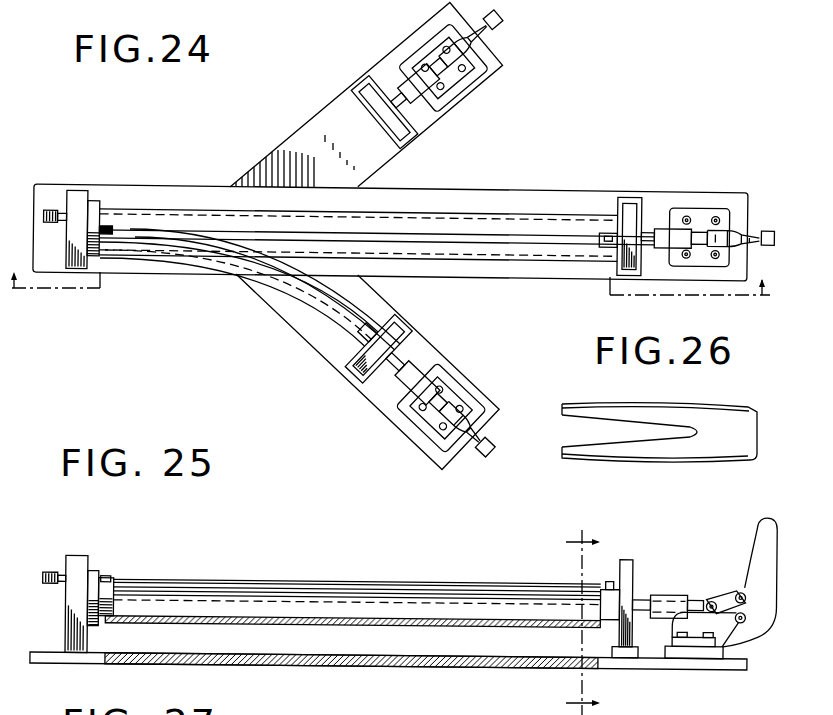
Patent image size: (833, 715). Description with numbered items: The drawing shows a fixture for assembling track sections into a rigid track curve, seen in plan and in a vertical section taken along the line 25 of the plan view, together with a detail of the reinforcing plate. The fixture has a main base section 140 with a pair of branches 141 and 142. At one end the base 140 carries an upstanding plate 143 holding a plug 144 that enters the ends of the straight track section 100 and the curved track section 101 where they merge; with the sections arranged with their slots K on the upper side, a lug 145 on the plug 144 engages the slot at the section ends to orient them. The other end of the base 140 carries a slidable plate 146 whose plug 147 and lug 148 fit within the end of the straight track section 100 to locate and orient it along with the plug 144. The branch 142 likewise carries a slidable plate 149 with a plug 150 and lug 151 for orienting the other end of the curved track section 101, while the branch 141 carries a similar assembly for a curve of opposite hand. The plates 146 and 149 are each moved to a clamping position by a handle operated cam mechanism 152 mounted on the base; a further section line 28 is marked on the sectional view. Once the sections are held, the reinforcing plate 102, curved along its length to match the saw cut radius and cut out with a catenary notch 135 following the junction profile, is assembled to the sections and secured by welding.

In FIG. 24, the straight track section 100 is at (452, 212).
In FIG. 25, the straight track section 100 is at (377, 623).
In FIG. 24, the curved track section 101 is at (277, 287).
In FIG. 26, the reinforcing plate 102 is at (719, 405).
In FIG. 26, the notch 135 is at (648, 448).
In FIG. 24, the main base section 140 is at (530, 202).
In FIG. 25, the main base section 140 is at (467, 668).
In FIG. 24, the branch 141 is at (380, 152).
In FIG. 24, the branch 142 is at (385, 310).
In FIG. 24, the upstanding plate 143 is at (76, 196).
In FIG. 25, the upstanding plate 143 is at (78, 556).
In FIG. 24, the plug 144 is at (102, 270).
In FIG. 25, the plug 144 is at (115, 600).
In FIG. 24, the lug 145 is at (114, 229).
In FIG. 25, the lug 145 is at (105, 575).
In FIG. 24, the slidable plate 146 is at (630, 205).
In FIG. 25, the slidable plate 146 is at (625, 572).
In FIG. 24, the plug 147 is at (611, 226).
In FIG. 25, the plug 147 is at (598, 628).
In FIG. 24, the lug 148 is at (610, 237).
In FIG. 25, the lug 148 is at (607, 582).
In FIG. 24, the slidable plate 149 is at (400, 328).
In FIG. 24, the plug 150 is at (365, 363).
In FIG. 24, the lug 151 is at (362, 349).
In FIG. 24, the handle operated cam mechanism 152 is at (712, 200).
In FIG. 25, the handle operated cam mechanism 152 is at (718, 585).
In FIG. 24, the slot K is at (472, 233).
In FIG. 25, the slot K is at (397, 585).
In FIG. 24, the section line 25- 25 is at (387, 303).
In FIG. 25, the section line 28- 28 is at (580, 612).